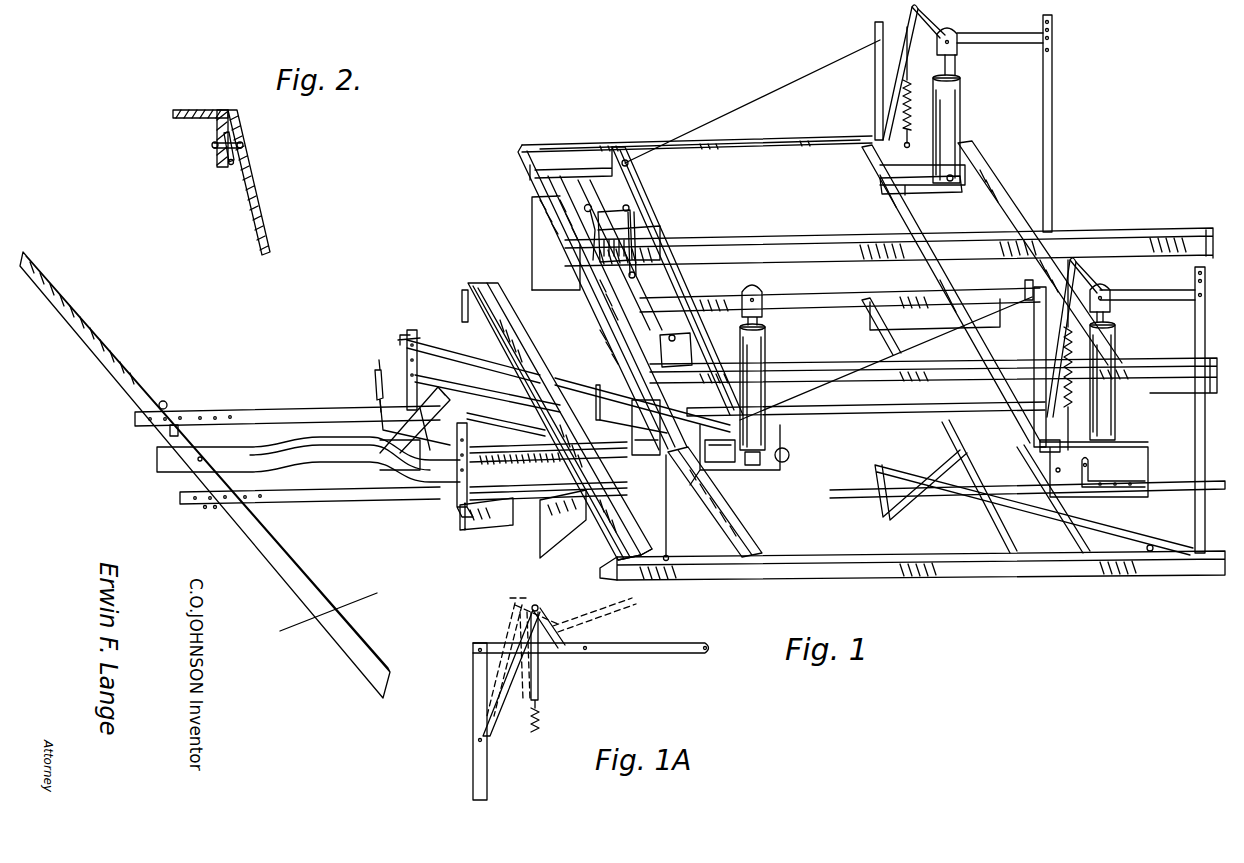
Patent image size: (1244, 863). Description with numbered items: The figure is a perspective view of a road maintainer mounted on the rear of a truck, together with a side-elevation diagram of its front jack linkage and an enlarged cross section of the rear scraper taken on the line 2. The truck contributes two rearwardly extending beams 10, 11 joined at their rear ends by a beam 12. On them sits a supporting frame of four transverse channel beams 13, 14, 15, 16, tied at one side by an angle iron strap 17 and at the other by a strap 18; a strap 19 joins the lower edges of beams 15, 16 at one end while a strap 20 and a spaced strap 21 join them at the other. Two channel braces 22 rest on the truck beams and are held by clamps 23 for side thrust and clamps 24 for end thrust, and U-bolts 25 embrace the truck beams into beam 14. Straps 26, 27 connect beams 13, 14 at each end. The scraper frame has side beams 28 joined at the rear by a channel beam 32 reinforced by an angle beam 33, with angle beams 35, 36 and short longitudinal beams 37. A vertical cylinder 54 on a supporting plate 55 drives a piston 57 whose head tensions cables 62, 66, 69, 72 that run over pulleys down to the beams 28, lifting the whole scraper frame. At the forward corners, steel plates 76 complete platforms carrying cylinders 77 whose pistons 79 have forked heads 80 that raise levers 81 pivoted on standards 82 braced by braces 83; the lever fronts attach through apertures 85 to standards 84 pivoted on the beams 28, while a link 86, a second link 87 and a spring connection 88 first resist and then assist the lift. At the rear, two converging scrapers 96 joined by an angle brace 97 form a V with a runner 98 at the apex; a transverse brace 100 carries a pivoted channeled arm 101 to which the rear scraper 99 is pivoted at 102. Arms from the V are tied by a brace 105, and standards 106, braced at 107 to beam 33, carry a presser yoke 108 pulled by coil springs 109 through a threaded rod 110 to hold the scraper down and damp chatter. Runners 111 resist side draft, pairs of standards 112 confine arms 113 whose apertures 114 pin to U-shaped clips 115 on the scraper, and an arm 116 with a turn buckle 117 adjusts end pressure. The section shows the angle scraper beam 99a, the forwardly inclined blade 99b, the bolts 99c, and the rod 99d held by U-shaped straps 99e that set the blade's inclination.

In FIG. 1, the section line 2 is at (330, 609).
In FIG. 1, the rearwardly extending beam 10 is at (835, 238).
In FIG. 1, the rearwardly extending beam 11 is at (840, 366).
In FIG. 1, the beam 12 is at (562, 266).
In FIG. 1, the transverse beam 13 is at (995, 192).
In FIG. 1, the transverse beam 14 is at (890, 198).
In FIG. 1, the transverse beam 15 is at (665, 228).
In FIG. 1, the transverse beam 16 is at (527, 166).
In FIG. 1, the angle iron strap 17 is at (812, 141).
In FIG. 1, the angle iron strap 18 is at (816, 420).
In FIG. 1, the angle iron strap 19 is at (576, 172).
In FIG. 1, the angle iron strap 20 is at (770, 452).
In FIG. 1, the strap 21 is at (642, 428).
In FIG. 1, the channel steel brace 22 is at (614, 218).
In FIG. 1, the clamp 23 is at (586, 205).
In FIG. 1, the clamp 24 is at (640, 258).
In FIG. 1, the U-bolt 25 is at (915, 262).
In FIG. 1, the angle steel strap 26 is at (1052, 450).
In FIG. 1, the angle steel strap 27 is at (922, 192).
In FIG. 1, the side beam 28 is at (486, 290).
In FIG. 1, the channel beam 32 is at (524, 352).
In FIG. 1, the angle beam 33 is at (626, 558).
In FIG. 1, the angle beam 35 is at (892, 345).
In FIG. 1, the angle beam 36 is at (1040, 481).
In FIG. 1, the longitudinal angle steel beam 37 is at (1170, 491).
In FIG. 1, the vertical cylinder 54 is at (778, 462).
In FIG. 1, the supporting plate 55 is at (755, 468).
In FIG. 1, the piston 57 is at (768, 324).
In FIG. 1, the cable 62 is at (540, 228).
In FIG. 1, the cable 66 is at (680, 510).
In FIG. 1, the cable 69 is at (1150, 510).
In FIG. 1, the cable 72 is at (1020, 286).
In FIG. 1, the steel plate 76 is at (932, 178).
In FIG. 1, the cylinder 77 is at (960, 105).
In FIG. 1, the piston 79 is at (957, 68).
In FIG. 1, the forked head 80 is at (952, 32).
In FIG. 1, the lever 81 is at (1005, 45).
In FIG. 1A, the lever 81 is at (645, 653).
In FIG. 1, the standard 82 is at (876, 98).
In FIG. 1A, the standard 82 is at (480, 768).
In FIG. 1, the brace 83 is at (762, 100).
In FIG. 1, the standard 84 is at (1052, 128).
In FIG. 1, the aperture 85 is at (1052, 50).
In FIG. 1, the link 86 is at (906, 30).
In FIG. 1A, the link 86 is at (500, 714).
In FIG. 1, the second link 87 is at (917, 26).
In FIG. 1A, the second link 87 is at (560, 646).
In FIG. 1, the flexible and resilient connection 88 is at (909, 82).
In FIG. 1A, the flexible and resilient connection 88 is at (539, 680).
In FIG. 1, the scraper 96 is at (650, 448).
In FIG. 1, the angle iron brace 97 is at (540, 530).
In FIG. 1, the runner 98 is at (745, 472).
In FIG. 1, the rear scraper 99 is at (268, 585).
In FIG. 2, the scraper beam 99a is at (202, 110).
In FIG. 2, the scraper blade 99b is at (264, 222).
In FIG. 2, the bolt 99c is at (212, 145).
In FIG. 2, the rod 99d is at (231, 167).
In FIG. 2, the U-shaped strap 99e is at (243, 147).
In FIG. 1, the transverse brace 100 is at (598, 410).
In FIG. 1, the rearwardly extending arm 101 is at (348, 462).
In FIG. 1, the pivot 102 is at (196, 462).
In FIG. 1, the brace 105 is at (455, 464).
In FIG. 1, the standard 106 is at (398, 345).
In FIG. 1, the brace 107 is at (520, 412).
In FIG. 1, the yoke or presser arm 108 is at (396, 422).
In FIG. 1, the coil spring 109 is at (525, 460).
In FIG. 1, the screw threaded rod 110 is at (407, 490).
In FIG. 1, the runner 111 is at (495, 520).
In FIG. 1, the standard 112 is at (414, 332).
In FIG. 1, the arm 113 is at (268, 412).
In FIG. 1, the aperture 114 is at (213, 509).
In FIG. 1, the U-shaped clip 115 is at (166, 402).
In FIG. 1, the arm 116 is at (458, 352).
In FIG. 1, the turn buckle 117 is at (374, 380).